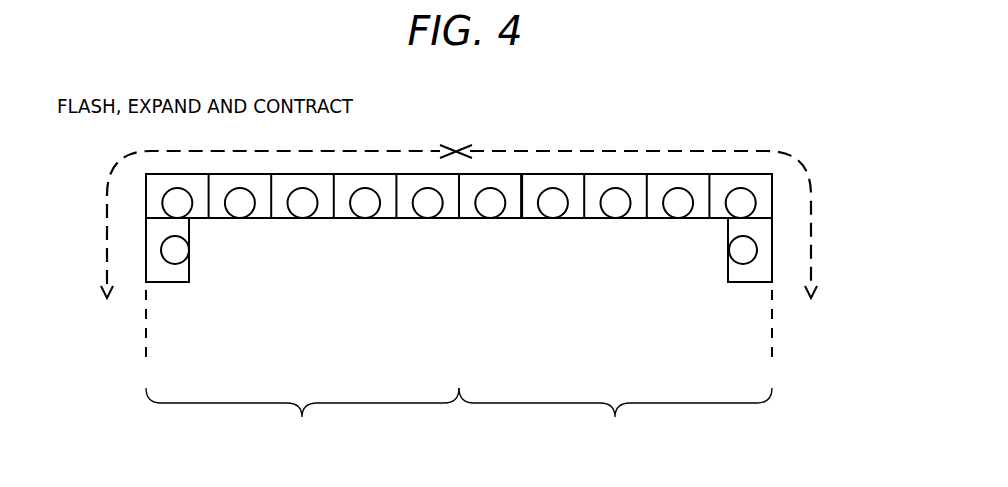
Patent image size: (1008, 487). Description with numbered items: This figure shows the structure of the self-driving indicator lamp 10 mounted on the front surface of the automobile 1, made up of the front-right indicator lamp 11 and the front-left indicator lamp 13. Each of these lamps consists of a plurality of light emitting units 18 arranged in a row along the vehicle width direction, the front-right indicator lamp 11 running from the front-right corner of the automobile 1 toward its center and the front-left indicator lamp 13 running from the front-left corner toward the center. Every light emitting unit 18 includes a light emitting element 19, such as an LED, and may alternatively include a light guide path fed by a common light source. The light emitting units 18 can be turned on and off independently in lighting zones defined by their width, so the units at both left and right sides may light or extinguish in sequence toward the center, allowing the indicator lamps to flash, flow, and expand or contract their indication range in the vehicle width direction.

The automobile 1 is at (775, 337).
The self-driving indicator lamp 10 is at (459, 314).
The front-right indicator lamp 11 is at (615, 421).
The front-left indicator lamp 13 is at (302, 421).
The light emitting unit 18 is at (203, 218).
The light emitting element 19 is at (371, 189).